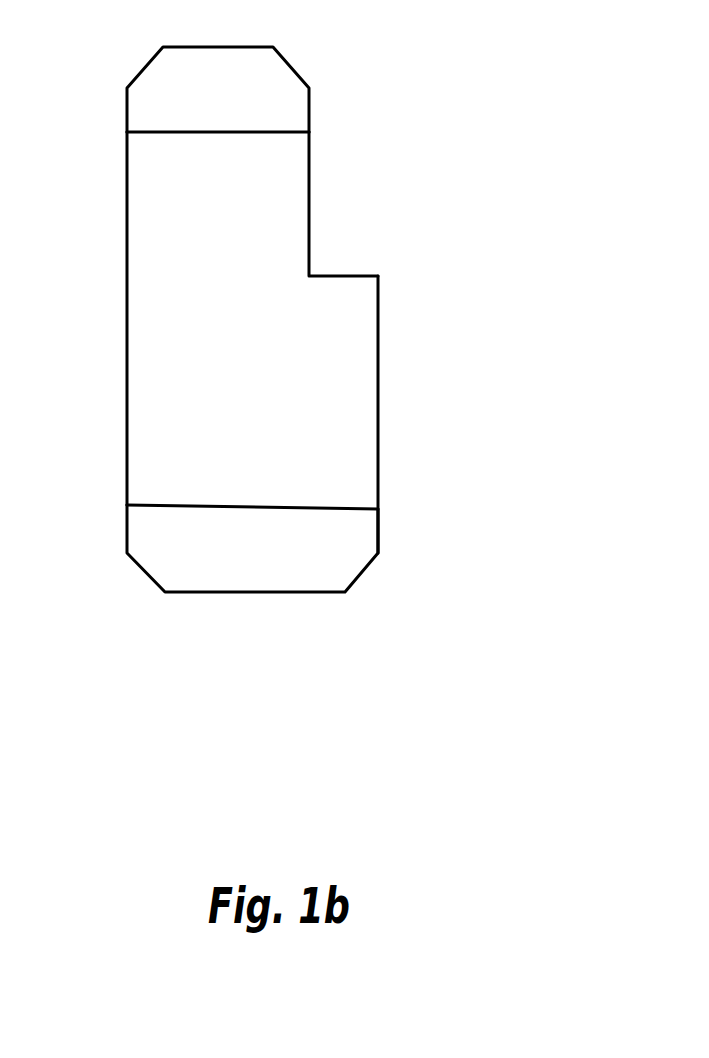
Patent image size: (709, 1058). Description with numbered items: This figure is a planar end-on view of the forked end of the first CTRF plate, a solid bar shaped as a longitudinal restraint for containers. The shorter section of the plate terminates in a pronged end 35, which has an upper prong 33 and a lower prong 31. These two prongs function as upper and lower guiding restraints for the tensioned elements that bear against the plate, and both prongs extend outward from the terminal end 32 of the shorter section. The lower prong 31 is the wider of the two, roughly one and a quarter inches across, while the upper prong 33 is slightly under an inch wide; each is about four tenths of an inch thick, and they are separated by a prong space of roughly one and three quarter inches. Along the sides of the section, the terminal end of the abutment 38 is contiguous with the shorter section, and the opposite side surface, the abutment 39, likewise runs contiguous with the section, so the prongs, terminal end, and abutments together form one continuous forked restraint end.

The bottom prong 31 is at (295, 569).
The terminal end 32 is at (213, 360).
The upper prong 33 is at (238, 93).
The pronged end 35 is at (343, 356).
The abutment 38 is at (378, 358).
The abutment 39 is at (128, 337).